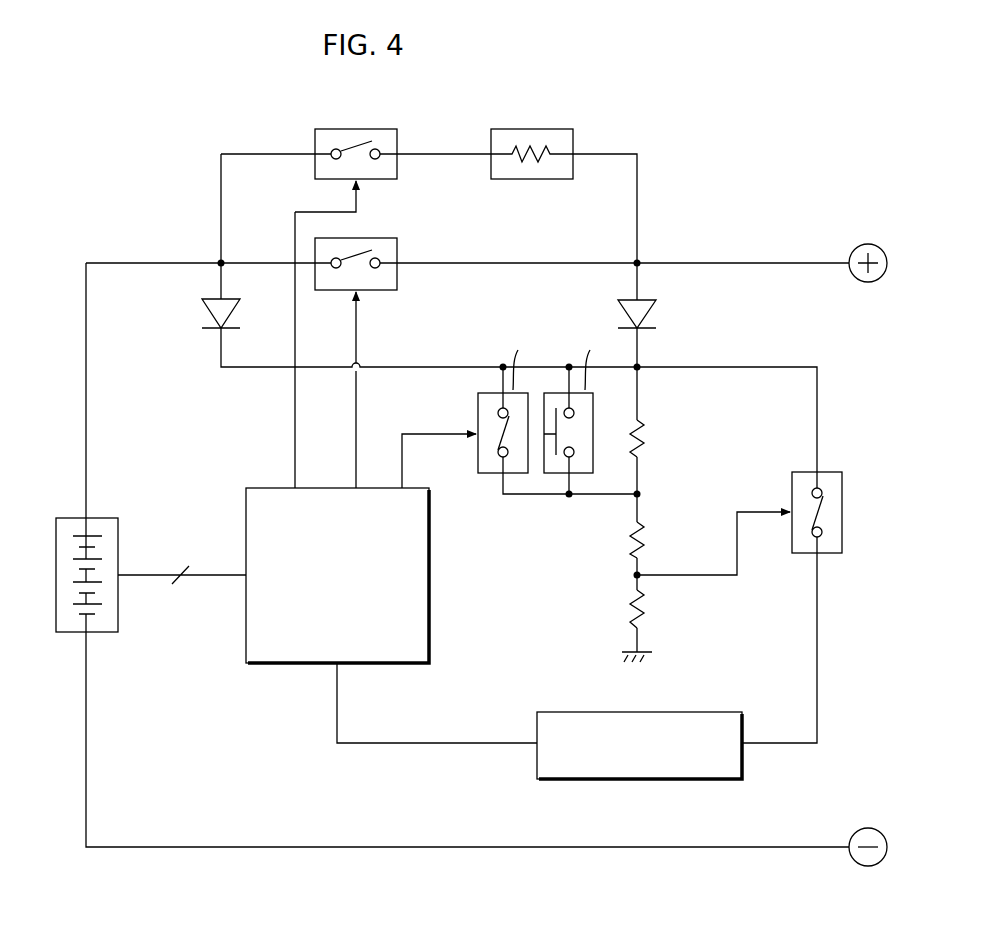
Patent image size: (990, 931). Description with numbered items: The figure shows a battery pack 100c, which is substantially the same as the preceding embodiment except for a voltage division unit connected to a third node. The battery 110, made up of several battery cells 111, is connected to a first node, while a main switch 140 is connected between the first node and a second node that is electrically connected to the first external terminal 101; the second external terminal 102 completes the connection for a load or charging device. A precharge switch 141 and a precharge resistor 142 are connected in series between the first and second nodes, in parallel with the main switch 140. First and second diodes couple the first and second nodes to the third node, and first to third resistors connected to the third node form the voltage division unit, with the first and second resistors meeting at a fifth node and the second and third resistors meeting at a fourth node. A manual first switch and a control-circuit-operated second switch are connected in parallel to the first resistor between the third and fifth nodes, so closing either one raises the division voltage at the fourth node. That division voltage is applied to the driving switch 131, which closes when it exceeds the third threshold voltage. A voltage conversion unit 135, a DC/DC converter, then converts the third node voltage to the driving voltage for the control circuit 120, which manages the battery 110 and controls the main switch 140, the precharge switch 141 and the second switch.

The battery pack 100c is at (880, 143).
The first external terminal 101 is at (887, 263).
The second external terminal 102 is at (887, 847).
The battery 110 is at (117, 560).
The battery cell 111 is at (105, 542).
The control circuit 120 is at (430, 576).
The driving switch 131 is at (830, 470).
The voltage conversion unit 135 is at (663, 709).
The main switch 140 is at (357, 237).
The precharge switch 141 is at (357, 128).
The precharge resistor 142 is at (533, 128).